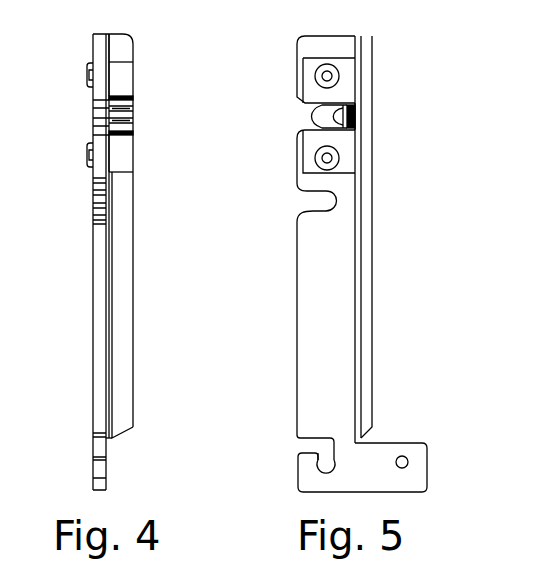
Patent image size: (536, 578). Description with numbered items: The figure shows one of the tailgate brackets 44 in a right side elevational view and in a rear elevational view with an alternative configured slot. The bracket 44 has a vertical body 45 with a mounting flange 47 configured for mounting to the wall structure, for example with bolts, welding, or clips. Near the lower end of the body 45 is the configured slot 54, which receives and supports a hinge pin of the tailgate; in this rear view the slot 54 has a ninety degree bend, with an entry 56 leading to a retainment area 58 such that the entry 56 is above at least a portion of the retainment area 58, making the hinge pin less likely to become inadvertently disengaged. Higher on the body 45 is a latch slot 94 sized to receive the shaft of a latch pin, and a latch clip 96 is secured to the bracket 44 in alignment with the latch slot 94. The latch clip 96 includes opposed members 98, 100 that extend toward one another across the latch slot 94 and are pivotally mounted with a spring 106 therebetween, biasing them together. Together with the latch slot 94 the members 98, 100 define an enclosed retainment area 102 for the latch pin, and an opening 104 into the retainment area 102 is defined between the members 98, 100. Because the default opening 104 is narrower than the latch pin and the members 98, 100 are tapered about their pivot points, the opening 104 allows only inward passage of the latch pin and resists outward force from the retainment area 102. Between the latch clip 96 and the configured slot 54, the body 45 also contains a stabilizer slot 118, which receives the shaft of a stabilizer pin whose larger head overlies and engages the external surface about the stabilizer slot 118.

In FIG. 4, the bracket 44 is at (141, 50).
In FIG. 5, the bracket 44 is at (382, 50).
In FIG. 4, the body 45 is at (102, 327).
In FIG. 5, the body 45 is at (298, 316).
In FIG. 4, the mounting flange 47 is at (127, 328).
In FIG. 5, the mounting flange 47 is at (363, 313).
In FIG. 5, the configured slot 54 is at (312, 453).
In FIG. 4, the entry 56 is at (93, 443).
In FIG. 5, the entry 56 is at (298, 447).
In FIG. 5, the retainment area 58 is at (330, 477).
In FIG. 4, the latch slot 94 is at (104, 122).
In FIG. 4, the latch clip 96 is at (138, 118).
In FIG. 5, the latch clip 96 is at (360, 98).
In FIG. 4, the member 98 is at (132, 162).
In FIG. 5, the member 98 is at (307, 146).
In FIG. 4, the member 100 is at (128, 93).
In FIG. 5, the member 100 is at (307, 80).
In FIG. 5, the retainment area 102 is at (358, 128).
In FIG. 5, the opening 104 is at (335, 120).
In FIG. 5, the spring 106 is at (355, 118).
In FIG. 4, the stabilizer slot 118 is at (100, 205).
In FIG. 5, the stabilizer slot 118 is at (307, 203).